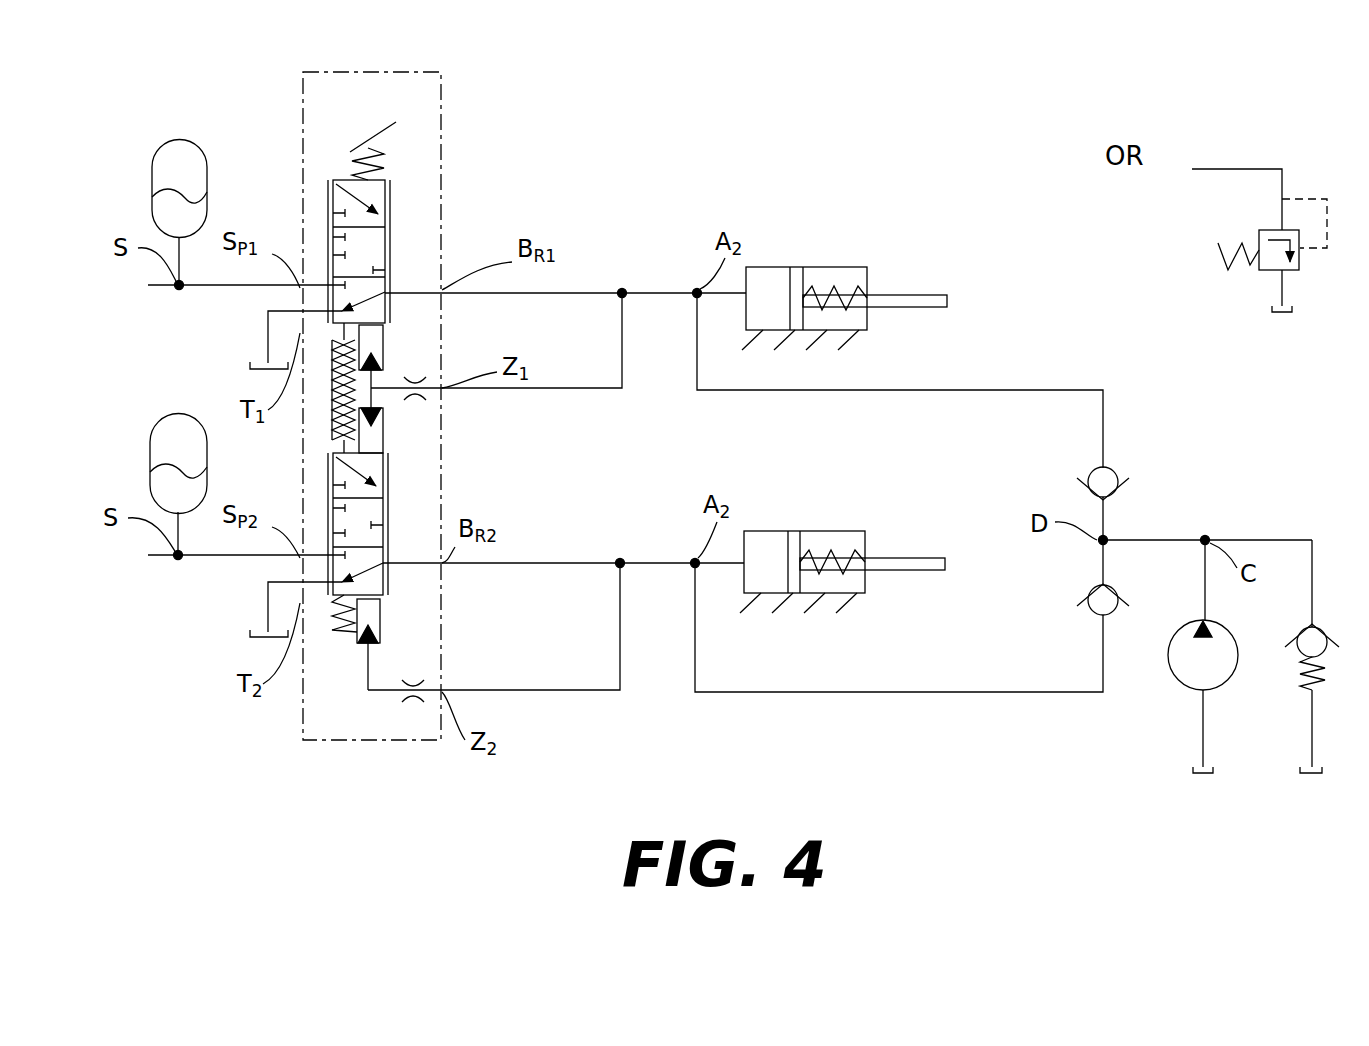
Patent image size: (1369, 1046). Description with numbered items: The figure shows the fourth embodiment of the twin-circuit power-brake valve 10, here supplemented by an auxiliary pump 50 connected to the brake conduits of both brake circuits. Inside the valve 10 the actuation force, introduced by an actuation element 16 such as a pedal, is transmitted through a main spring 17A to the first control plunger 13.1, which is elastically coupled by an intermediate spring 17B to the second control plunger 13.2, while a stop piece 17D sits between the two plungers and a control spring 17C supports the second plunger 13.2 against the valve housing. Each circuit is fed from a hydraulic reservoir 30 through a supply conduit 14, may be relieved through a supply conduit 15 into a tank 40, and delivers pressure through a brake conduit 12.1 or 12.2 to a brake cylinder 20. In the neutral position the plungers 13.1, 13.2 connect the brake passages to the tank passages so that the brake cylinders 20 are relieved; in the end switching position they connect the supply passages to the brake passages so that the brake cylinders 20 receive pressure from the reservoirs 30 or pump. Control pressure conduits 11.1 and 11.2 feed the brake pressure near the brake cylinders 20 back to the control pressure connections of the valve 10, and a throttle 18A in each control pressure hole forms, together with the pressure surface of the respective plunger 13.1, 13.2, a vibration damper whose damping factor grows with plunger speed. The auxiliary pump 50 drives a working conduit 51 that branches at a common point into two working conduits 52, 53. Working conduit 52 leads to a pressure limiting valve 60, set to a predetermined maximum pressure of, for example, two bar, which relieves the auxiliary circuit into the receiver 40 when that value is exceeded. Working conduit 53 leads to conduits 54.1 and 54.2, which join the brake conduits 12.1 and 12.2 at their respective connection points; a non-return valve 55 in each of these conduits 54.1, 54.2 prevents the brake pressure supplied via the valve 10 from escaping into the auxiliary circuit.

The power-brake valve 10 is at (447, 82).
The hydraulic reservoir 30 is at (173, 116).
The supply conduit 14 is at (165, 292).
The supply conduit to tank 15 is at (268, 332).
The tank 40 is at (247, 378).
The first control plunger 13.1 is at (390, 250).
The second control plunger 13.2 is at (385, 525).
The actuation element 16 is at (376, 137).
The main spring 17A is at (388, 158).
The intermediate spring 17B is at (376, 400).
The control spring 17C is at (345, 632).
The stop piece 17D is at (330, 425).
The throttle 18A is at (414, 377).
The first brake conduit 12.1 is at (623, 288).
The second brake conduit 12.2 is at (621, 558).
The first control pressure conduit 11.1 is at (623, 360).
The second control pressure conduit 11.2 is at (621, 648).
The brake cylinder 20 is at (838, 266).
The first working conduit to brake circuit 54.1 is at (958, 390).
The second working conduit to brake circuit 54.2 is at (952, 692).
The non-return valve 55 is at (1092, 478).
The working conduit 53 is at (1186, 538).
The working conduit 52 is at (1281, 538).
The working conduit 51 is at (1203, 595).
The auxiliary pump 50 is at (1196, 697).
The pressure limiting valve 60 is at (1302, 624).